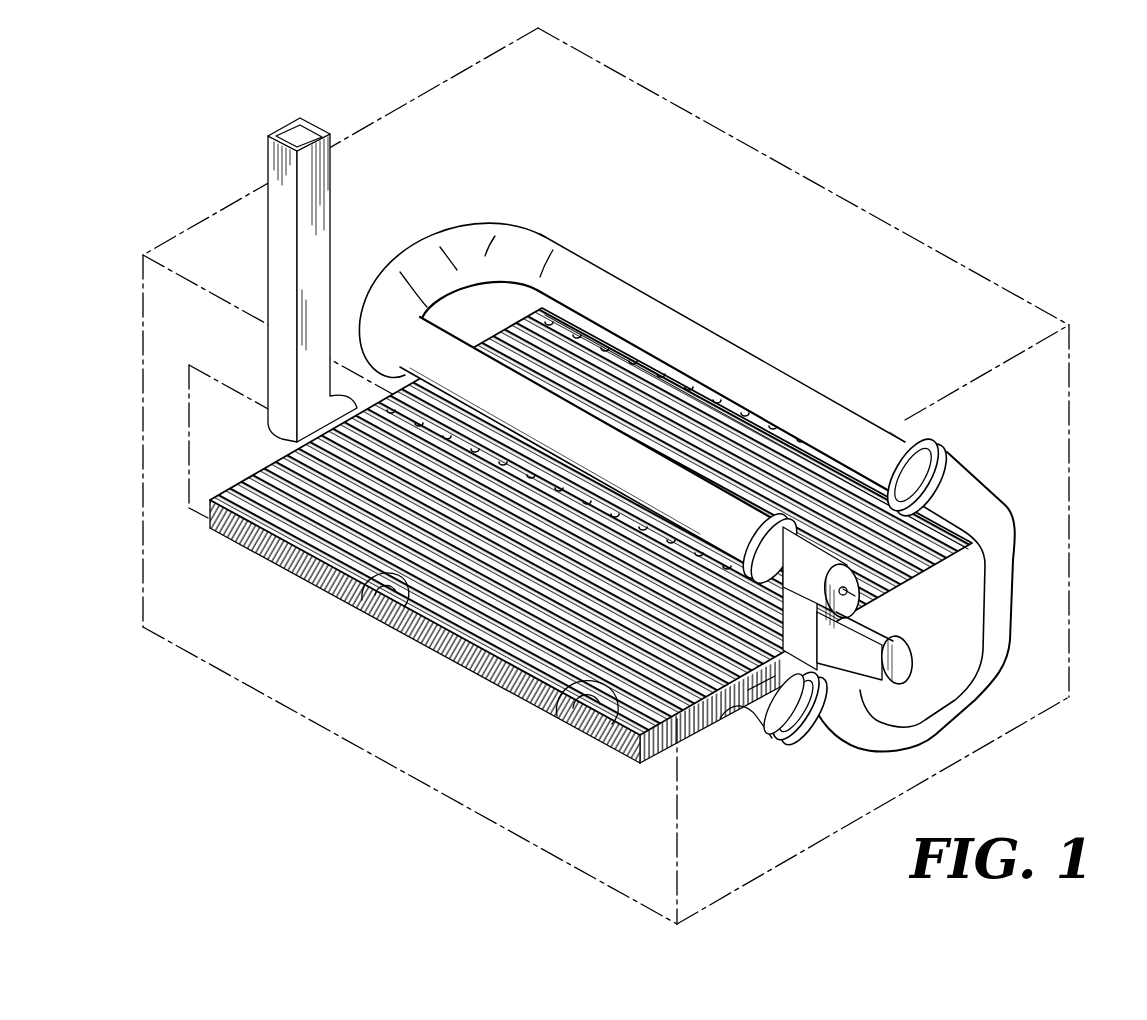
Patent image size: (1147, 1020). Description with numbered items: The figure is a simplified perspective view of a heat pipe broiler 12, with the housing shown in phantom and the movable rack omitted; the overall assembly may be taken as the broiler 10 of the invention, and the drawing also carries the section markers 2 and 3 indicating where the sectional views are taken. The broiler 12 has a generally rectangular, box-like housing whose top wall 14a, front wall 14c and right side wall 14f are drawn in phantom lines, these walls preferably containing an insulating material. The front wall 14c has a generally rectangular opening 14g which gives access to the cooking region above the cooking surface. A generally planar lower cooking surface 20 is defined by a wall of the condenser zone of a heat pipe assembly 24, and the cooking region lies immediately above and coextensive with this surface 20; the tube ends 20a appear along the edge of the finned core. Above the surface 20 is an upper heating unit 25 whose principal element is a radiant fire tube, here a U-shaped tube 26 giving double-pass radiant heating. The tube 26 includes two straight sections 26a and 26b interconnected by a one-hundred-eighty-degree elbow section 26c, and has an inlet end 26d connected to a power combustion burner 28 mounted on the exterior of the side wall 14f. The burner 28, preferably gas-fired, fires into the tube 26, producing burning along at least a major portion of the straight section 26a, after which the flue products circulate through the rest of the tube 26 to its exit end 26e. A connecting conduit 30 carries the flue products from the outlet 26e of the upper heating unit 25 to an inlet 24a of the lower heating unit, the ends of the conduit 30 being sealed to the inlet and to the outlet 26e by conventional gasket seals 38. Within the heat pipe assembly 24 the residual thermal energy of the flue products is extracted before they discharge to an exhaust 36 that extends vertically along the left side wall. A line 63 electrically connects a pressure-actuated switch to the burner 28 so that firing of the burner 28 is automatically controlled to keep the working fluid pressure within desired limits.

The heat exchanger assembly 10 is at (1080, 461).
The broiler 12 is at (803, 160).
The top wall 14a is at (946, 284).
The front wall 14c is at (360, 710).
The right side wall 14f is at (1050, 667).
The rectangular opening 14g is at (216, 475).
The lower cooking surface 20 is at (299, 496).
The core tubes 20a is at (356, 590).
The heat pipe assembly 24 is at (733, 727).
The inlet of the lower heating unit 24a is at (786, 727).
The upper heating unit 25 is at (427, 220).
The U-shaped tube 26 is at (641, 371).
The straight section 26a is at (585, 444).
The straight section 26b is at (721, 367).
The 180-degree elbow section 26c is at (478, 248).
The inlet end 26d is at (743, 512).
The exit end 26e is at (877, 418).
The power combustion burner 28 is at (856, 710).
The connecting conduit 30 is at (988, 626).
The exhaust 36 is at (282, 269).
The gasket seals 38 is at (942, 458).
The line 63 is at (875, 598).
The section line 2- 2 is at (198, 353).
The section line 3- 3 is at (592, 780).